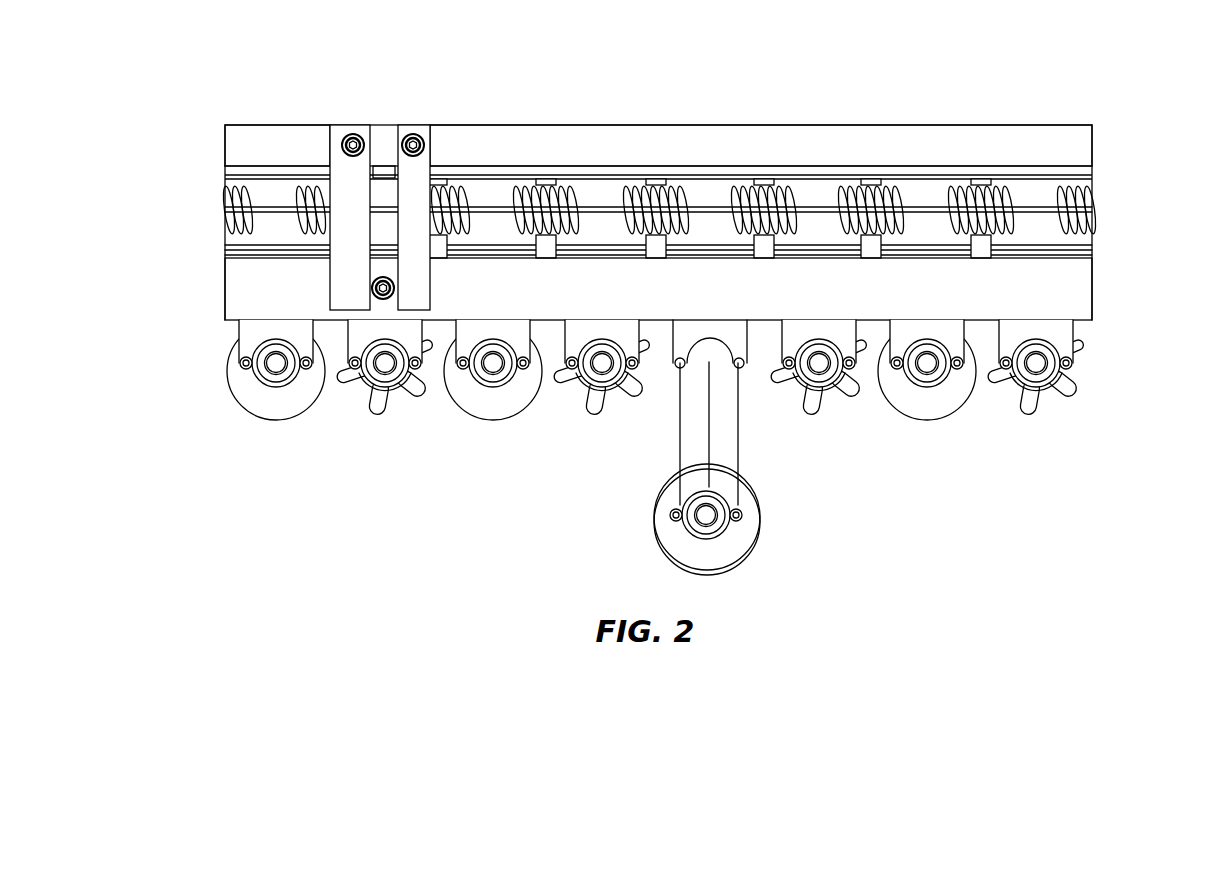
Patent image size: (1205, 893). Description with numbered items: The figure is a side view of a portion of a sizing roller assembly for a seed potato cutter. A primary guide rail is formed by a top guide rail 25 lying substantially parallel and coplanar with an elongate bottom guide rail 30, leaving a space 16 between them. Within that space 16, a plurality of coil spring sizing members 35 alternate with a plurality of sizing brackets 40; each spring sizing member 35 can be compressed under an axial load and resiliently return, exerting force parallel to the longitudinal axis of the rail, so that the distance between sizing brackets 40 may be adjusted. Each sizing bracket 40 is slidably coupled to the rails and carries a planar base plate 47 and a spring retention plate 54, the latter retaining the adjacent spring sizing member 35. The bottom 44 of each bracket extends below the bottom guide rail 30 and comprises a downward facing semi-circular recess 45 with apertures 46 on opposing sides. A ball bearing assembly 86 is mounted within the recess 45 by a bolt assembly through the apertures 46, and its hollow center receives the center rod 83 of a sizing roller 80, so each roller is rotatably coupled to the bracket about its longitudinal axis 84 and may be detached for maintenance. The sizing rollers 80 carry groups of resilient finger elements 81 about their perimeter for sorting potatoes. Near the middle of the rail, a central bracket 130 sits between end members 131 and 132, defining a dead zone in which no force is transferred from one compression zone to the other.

The space 16 is at (327, 242).
The top guide rail 25 is at (1045, 147).
The bottom guide rail 30 is at (1083, 300).
The spring sizing member 35 is at (235, 198).
The sizing bracket 40 is at (280, 190).
The bottom of the main body 44 is at (347, 337).
The semi-circular recess 45 is at (680, 370).
The apertures 46 is at (740, 370).
The planar base plate 47 is at (1090, 256).
The spring retention plate 54 is at (1060, 200).
The sizing roller 80 is at (233, 365).
The finger elements 81 is at (413, 395).
The center rod 83 is at (1060, 385).
The longitudinal axis 84 is at (277, 363).
The ball bearing assembly 86 is at (493, 375).
The central bracket 130 is at (384, 185).
The end member 131 is at (350, 128).
The end member 132 is at (418, 165).